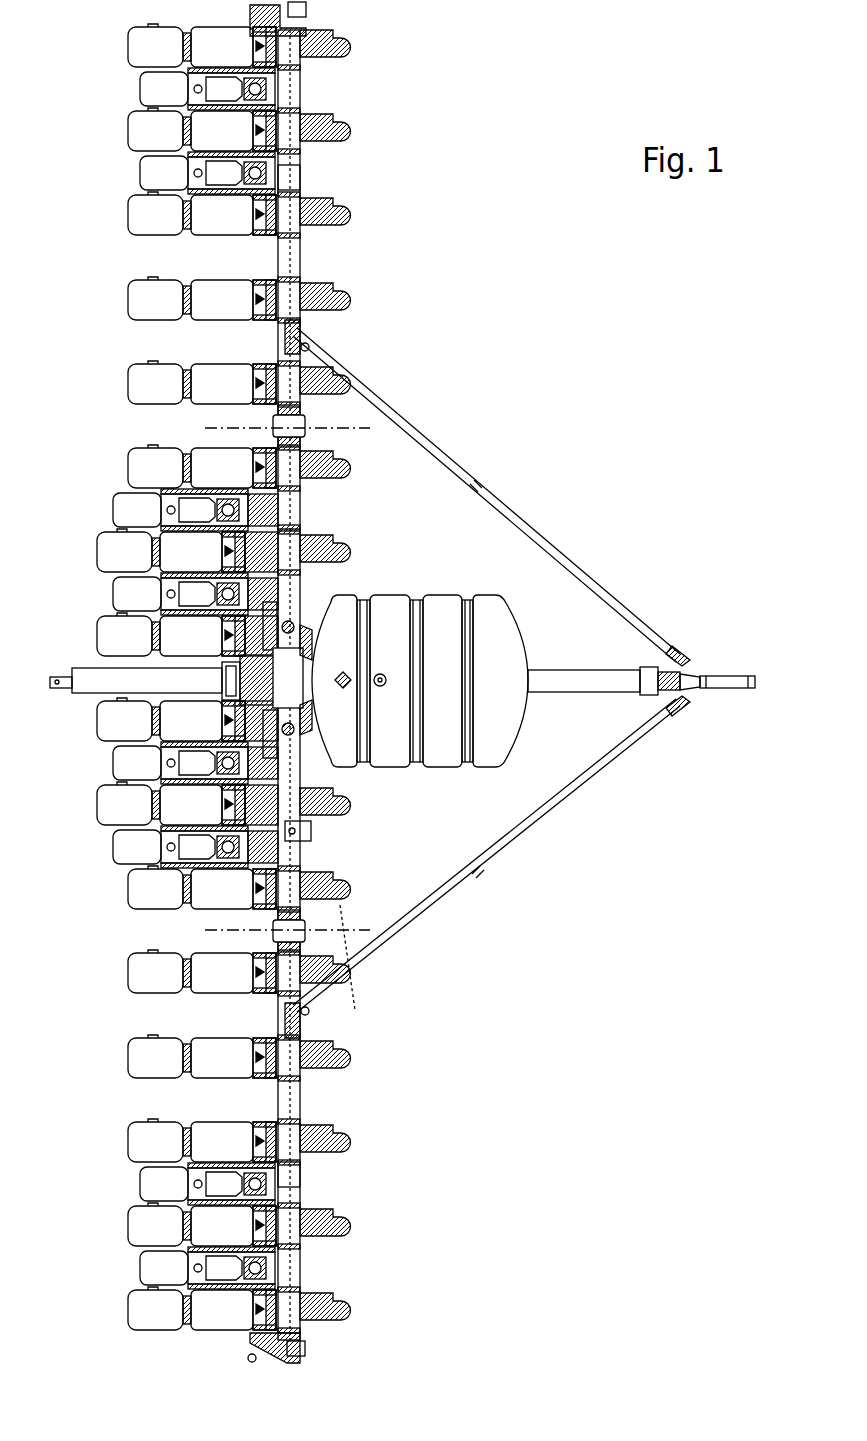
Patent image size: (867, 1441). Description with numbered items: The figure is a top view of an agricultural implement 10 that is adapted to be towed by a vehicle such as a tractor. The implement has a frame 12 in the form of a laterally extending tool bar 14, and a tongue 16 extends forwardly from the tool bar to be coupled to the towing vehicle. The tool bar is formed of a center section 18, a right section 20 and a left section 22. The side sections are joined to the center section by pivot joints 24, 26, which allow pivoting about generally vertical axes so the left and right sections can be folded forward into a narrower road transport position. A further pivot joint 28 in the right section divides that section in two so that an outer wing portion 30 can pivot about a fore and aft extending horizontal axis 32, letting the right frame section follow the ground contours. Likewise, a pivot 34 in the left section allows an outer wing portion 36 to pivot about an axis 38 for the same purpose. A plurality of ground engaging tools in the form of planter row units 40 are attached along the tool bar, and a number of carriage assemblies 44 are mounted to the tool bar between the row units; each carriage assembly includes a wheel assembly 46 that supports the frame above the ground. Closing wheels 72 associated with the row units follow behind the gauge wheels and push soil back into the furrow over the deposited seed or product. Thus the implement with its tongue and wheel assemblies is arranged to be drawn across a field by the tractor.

The implement 10 is at (553, 335).
The frame 12 is at (306, 260).
The tool bar 14 is at (280, 270).
The tongue 16 is at (506, 502).
The center section 18 is at (313, 629).
The right section 20 is at (301, 1102).
The left section 22 is at (300, 76).
The pivot joint 24 is at (308, 760).
The pivot joint 26 is at (303, 601).
The pivot joint 28 is at (300, 920).
The outer wing portion 30 is at (309, 1183).
The horizontal axis 32 is at (330, 948).
The pivot 34 is at (298, 434).
The outer wing portion 36 is at (305, 177).
The axis 38 is at (350, 418).
The planter row unit 40 is at (127, 43).
The carriage assembly 44 is at (128, 82).
The wheel assembly 46 is at (138, 93).
The closing wheel 72 is at (288, 530).